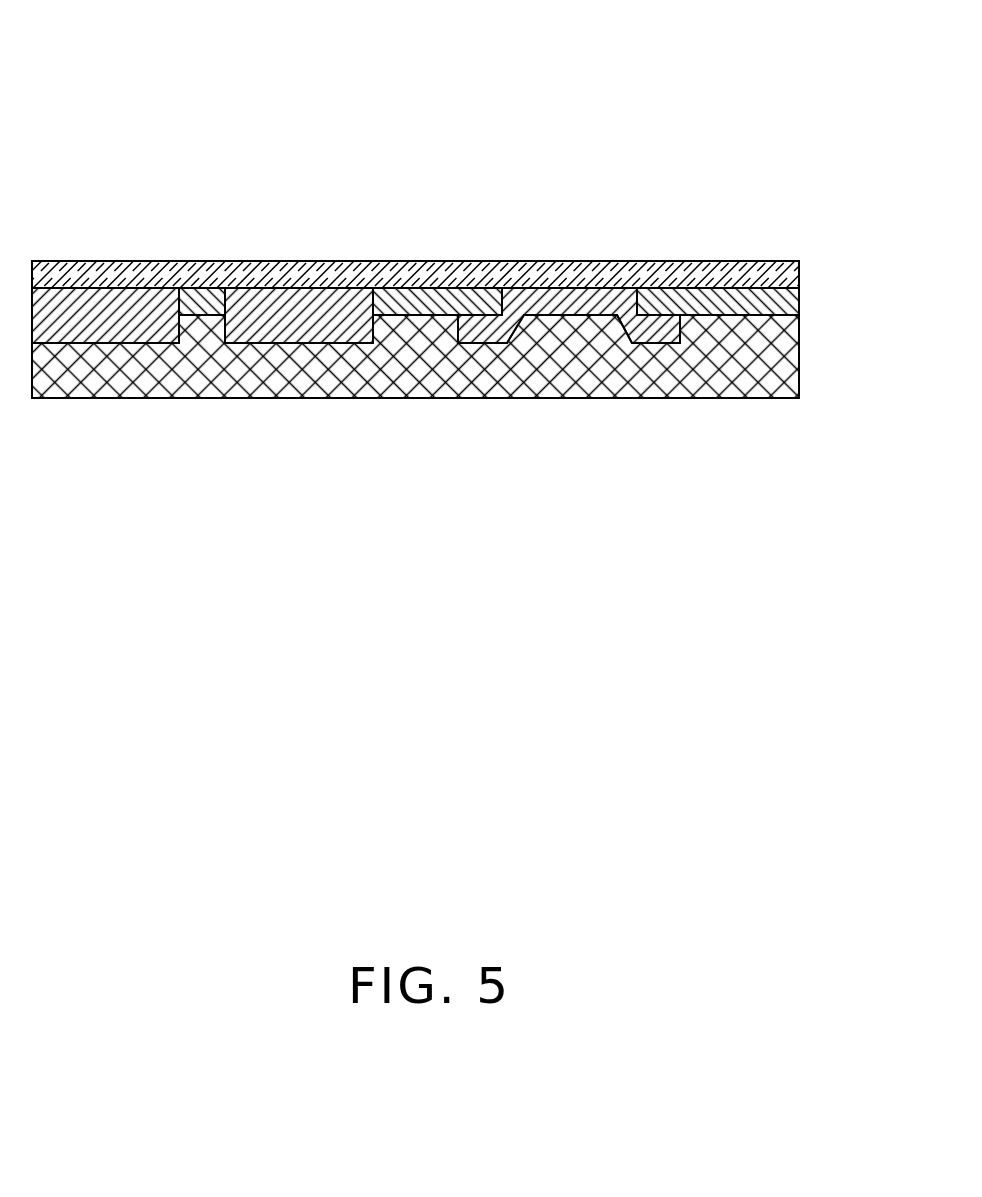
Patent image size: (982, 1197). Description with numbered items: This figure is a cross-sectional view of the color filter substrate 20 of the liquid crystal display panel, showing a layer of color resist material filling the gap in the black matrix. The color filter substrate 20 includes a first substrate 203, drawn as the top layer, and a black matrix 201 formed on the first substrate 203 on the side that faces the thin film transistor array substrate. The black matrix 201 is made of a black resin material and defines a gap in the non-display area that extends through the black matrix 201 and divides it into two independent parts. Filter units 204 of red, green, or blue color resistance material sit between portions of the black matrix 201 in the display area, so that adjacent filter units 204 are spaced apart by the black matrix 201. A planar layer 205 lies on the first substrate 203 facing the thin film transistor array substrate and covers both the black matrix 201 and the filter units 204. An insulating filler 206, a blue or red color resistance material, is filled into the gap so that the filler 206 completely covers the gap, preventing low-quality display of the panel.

The color filter substrate 20 is at (475, 48).
The black matrix 201 is at (213, 292).
The first substrate 203 is at (790, 272).
The filter units 204 is at (133, 290).
The planar layer 205 is at (790, 365).
The filler 206 is at (558, 313).